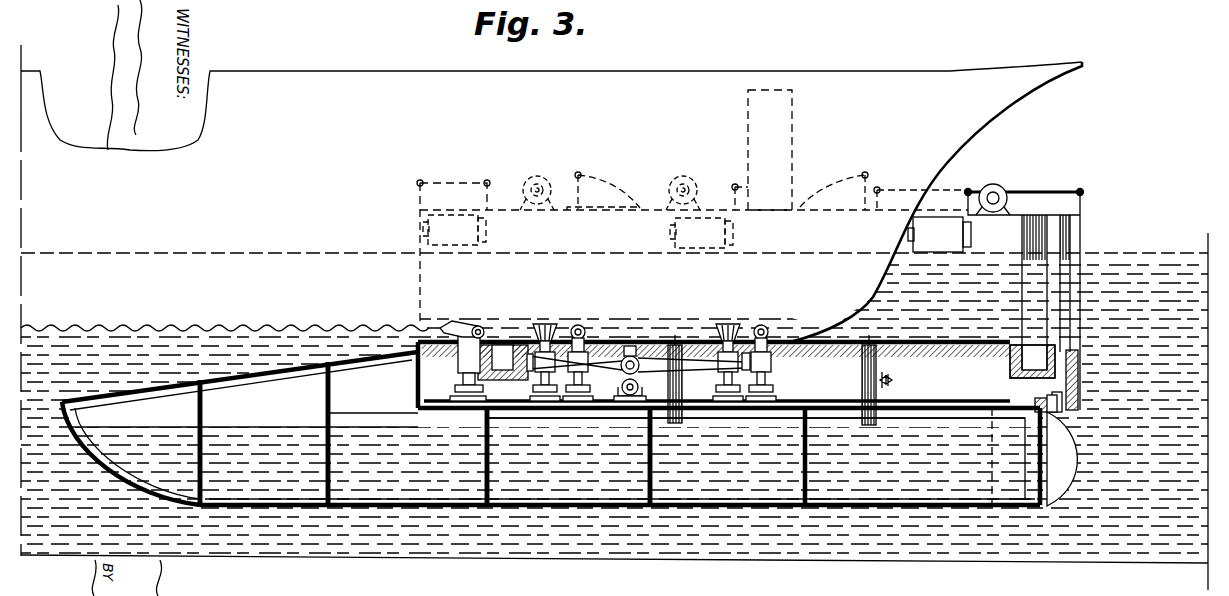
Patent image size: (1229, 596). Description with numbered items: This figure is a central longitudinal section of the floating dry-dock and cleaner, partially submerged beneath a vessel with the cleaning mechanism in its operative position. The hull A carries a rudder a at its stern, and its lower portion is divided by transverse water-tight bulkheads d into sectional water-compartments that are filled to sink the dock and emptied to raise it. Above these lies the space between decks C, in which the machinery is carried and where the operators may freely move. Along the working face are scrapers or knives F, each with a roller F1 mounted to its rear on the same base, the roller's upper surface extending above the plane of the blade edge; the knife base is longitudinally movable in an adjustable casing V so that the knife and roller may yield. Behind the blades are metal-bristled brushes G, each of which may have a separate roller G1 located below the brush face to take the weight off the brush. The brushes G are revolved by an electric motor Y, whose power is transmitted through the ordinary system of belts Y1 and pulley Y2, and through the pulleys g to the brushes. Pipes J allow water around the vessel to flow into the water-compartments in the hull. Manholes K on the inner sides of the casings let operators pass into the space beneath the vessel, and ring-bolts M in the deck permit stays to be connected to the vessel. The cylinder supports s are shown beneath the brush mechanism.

The adjustable casing V is at (458, 367).
The scraper or knife F is at (458, 322).
The roller F1 is at (481, 326).
The brush G is at (547, 323).
The roller G1 is at (777, 309).
The cylinder supports s is at (576, 408).
The pulley g is at (540, 366).
The belt Y1 is at (616, 374).
The pulley Y2 is at (628, 357).
The electric motor Y is at (637, 404).
The pipe J is at (683, 380).
The space between decks C is at (910, 381).
The rudder a is at (1062, 450).
The transverse water-tight bulkhead d is at (438, 433).
The hull A is at (756, 445).
The manhole K is at (697, 233).
The ring-bolt M is at (537, 176).